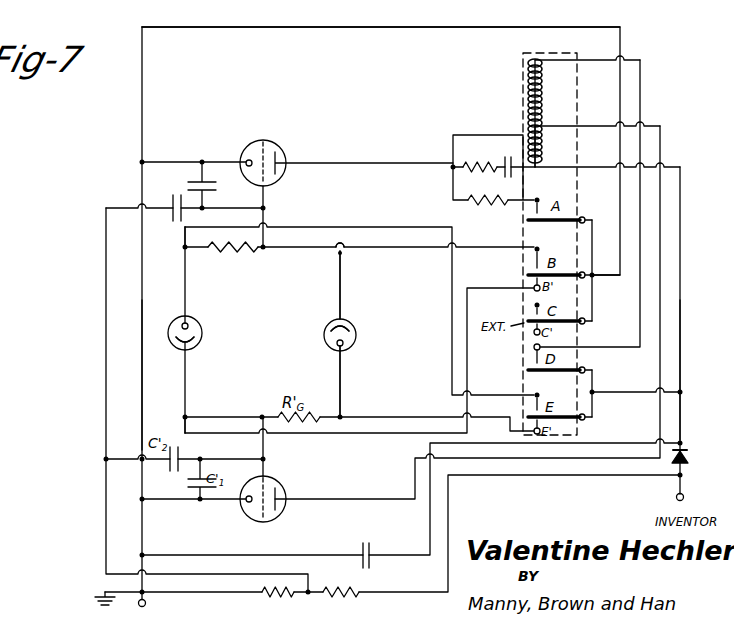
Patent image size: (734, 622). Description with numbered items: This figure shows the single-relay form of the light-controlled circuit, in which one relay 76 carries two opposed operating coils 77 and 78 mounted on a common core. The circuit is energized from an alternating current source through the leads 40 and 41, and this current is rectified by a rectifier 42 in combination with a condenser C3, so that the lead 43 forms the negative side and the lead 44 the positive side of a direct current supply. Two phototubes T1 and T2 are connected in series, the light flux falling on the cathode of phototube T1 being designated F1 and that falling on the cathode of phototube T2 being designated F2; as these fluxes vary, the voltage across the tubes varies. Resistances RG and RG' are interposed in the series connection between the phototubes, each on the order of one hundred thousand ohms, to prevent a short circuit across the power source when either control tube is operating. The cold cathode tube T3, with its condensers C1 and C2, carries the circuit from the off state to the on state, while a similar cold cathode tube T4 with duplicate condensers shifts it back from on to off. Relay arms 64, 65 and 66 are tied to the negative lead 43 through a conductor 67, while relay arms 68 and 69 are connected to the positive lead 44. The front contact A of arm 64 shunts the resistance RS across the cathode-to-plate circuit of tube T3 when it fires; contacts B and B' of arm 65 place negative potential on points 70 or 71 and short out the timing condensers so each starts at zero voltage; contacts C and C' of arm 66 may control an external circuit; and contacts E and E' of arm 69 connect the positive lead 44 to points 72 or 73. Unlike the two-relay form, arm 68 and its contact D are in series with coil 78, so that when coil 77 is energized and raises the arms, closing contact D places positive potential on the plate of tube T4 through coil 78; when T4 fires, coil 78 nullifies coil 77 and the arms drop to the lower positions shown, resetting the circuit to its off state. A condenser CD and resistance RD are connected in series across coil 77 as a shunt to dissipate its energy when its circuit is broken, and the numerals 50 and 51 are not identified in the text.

The lead 40 is at (147, 603).
The lead 41 is at (685, 489).
The rectifier 42 is at (690, 458).
The negative D. C. lead 43 is at (142, 386).
The positive D. C. lead 44 is at (683, 408).
The resistor 50 is at (336, 598).
The conductor 51 is at (530, 211).
The relay arm 64 is at (549, 223).
The relay arm 65 is at (556, 282).
The relay arm 66 is at (577, 325).
The conductor 67 is at (349, 30).
The relay arm 68 is at (536, 373).
The relay arm 69 is at (576, 421).
The point 70 is at (344, 252).
The point 71 is at (188, 417).
The point 72 is at (183, 248).
The point 73 is at (343, 417).
The relay 76 is at (573, 53).
The relay coil 77 is at (542, 158).
The relay coil 78 is at (529, 90).
The phototube T1 is at (196, 346).
The phototube T2 is at (352, 324).
The cold cathode tube T3 is at (277, 150).
The cold cathode tube T4 is at (270, 518).
The light flux F1 is at (198, 331).
The light flux F2 is at (352, 339).
The condenser C1 is at (212, 185).
The condenser C2 is at (165, 212).
The condenser C3 is at (376, 554).
The condenser CD is at (506, 157).
The resistance RG is at (233, 258).
The resistance RD is at (480, 158).
The resistance RS is at (488, 191).